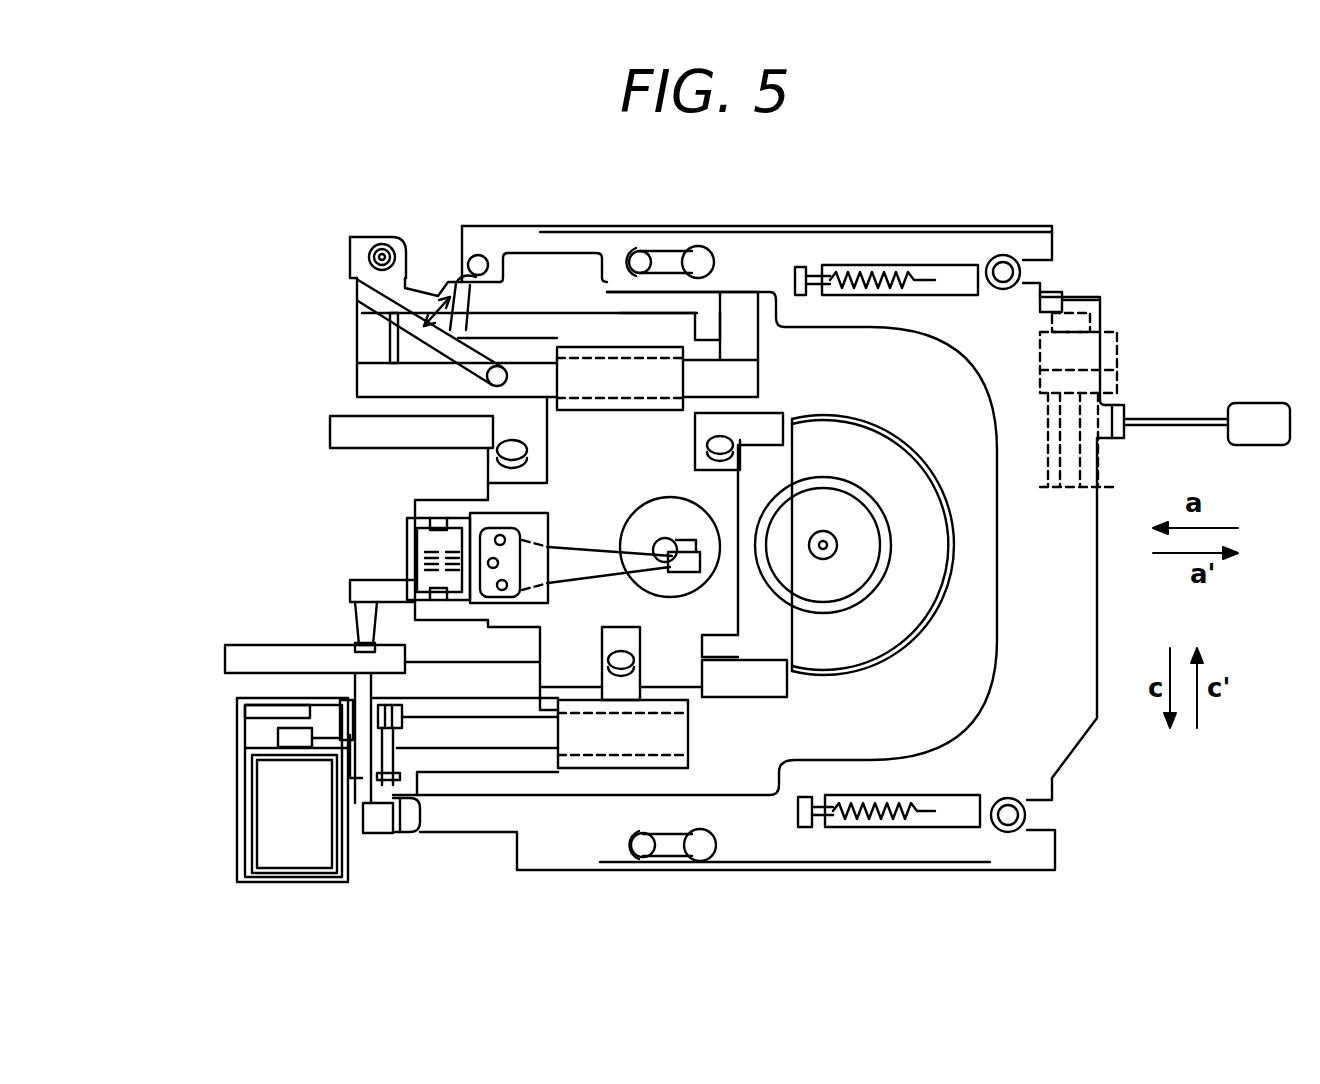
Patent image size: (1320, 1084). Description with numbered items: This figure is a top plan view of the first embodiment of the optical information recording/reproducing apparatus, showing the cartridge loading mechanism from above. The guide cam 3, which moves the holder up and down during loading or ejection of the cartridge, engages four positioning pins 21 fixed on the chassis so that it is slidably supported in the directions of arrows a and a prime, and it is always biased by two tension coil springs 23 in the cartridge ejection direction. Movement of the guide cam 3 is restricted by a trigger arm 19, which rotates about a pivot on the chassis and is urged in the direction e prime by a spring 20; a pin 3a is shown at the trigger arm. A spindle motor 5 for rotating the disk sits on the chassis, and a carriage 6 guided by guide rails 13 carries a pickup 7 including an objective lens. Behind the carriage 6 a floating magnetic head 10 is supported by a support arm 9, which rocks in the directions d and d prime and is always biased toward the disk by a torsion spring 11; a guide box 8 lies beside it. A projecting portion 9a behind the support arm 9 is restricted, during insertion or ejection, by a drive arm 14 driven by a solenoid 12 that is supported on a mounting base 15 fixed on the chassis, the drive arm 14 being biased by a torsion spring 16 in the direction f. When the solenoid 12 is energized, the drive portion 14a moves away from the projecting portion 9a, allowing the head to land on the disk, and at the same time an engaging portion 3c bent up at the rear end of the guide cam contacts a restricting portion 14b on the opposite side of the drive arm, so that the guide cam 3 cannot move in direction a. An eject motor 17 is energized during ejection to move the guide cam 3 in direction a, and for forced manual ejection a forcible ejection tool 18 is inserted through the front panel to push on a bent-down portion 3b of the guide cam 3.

The guide cam 3 is at (1090, 742).
The pin 3a is at (482, 256).
The bent-down portion 3b is at (1122, 405).
The engaging portion 3c is at (420, 823).
The spindle motor 5 is at (885, 458).
The carriage 6 is at (677, 445).
The pickup 7 is at (647, 515).
The lower guide box 8 is at (590, 742).
The support arm 9 is at (372, 580).
The projecting portion 9a is at (357, 627).
The floating magnetic head 10 is at (572, 547).
The torsion spring 11 is at (420, 553).
The solenoid 12 is at (272, 858).
The guide rails 13 is at (337, 418).
The drive arm 14 is at (340, 758).
The drive portion 14a is at (283, 660).
The restricting portion 14b is at (370, 837).
The mounting base 15 is at (247, 727).
The torsion spring 16 is at (360, 742).
The eject motor 17 is at (1107, 327).
The forcible ejection tool 18 is at (1238, 403).
The trigger arm 19 is at (418, 300).
The spring 20 is at (352, 240).
The positioning pins 21 is at (641, 262).
The tension coil springs 23 is at (848, 266).